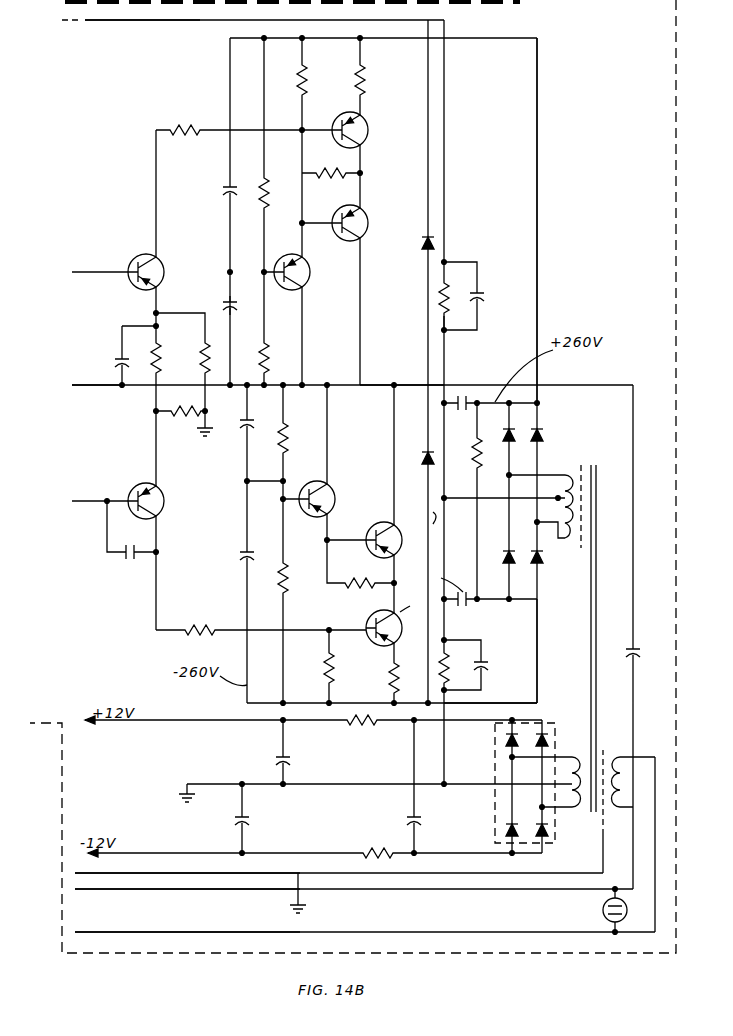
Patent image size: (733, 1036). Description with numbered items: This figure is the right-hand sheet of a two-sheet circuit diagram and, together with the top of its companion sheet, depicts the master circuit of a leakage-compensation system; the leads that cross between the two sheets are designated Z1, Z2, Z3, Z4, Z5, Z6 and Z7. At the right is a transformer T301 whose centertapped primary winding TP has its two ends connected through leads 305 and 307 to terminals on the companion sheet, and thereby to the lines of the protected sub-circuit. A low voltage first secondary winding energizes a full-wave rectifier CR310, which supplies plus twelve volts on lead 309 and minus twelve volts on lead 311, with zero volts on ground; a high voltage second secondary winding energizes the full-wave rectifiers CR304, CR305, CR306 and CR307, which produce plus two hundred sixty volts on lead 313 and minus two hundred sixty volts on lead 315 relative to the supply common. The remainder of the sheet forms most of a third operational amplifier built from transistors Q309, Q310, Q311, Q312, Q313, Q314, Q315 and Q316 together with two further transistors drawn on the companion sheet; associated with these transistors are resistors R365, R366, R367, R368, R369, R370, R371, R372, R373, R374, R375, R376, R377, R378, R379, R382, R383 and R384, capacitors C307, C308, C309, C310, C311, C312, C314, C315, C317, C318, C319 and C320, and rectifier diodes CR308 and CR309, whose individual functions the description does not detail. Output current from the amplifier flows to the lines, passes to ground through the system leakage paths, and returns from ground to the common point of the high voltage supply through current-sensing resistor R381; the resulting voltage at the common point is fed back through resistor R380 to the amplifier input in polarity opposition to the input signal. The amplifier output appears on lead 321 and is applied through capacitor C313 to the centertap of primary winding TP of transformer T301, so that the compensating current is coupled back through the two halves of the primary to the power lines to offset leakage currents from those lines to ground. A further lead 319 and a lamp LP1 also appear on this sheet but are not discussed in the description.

The interconnecting lead Z1 is at (100, 20).
The interconnecting lead Z2 is at (98, 270).
The interconnecting lead Z3 is at (96, 384).
The interconnecting lead Z4 is at (98, 500).
The interconnecting lead Z5 is at (96, 866).
The interconnecting lead Z6 is at (92, 892).
The interconnecting lead Z7 is at (96, 924).
The lead 309 is at (138, 720).
The lead 311 is at (134, 852).
The lead 307 is at (140, 866).
The ground return line 319 is at (146, 892).
The lead 305 is at (195, 924).
The lead 313 is at (537, 218).
The lead 321 is at (424, 384).
The lead 315 is at (544, 652).
The resistor R369 is at (183, 128).
The capacitor C309 is at (222, 192).
The resistor R374 is at (308, 72).
The resistor R378 is at (368, 72).
The transistor Q312 is at (366, 118).
The resistor R370 is at (270, 180).
The resistor R375 is at (356, 174).
The transistor Q313 is at (361, 218).
The transistor Q311 is at (303, 262).
The diode CR308 is at (420, 248).
The resistor R380 is at (436, 296).
The capacitor C314 is at (482, 297).
The transistor Q309 is at (158, 260).
The capacitor C310 is at (228, 300).
The potentiometer R366 is at (200, 356).
The potentiometer R365 is at (150, 364).
The capacitor C307 is at (116, 357).
The resistor R371 is at (270, 340).
The resistor R367 is at (162, 410).
The transistor Q310 is at (166, 498).
The capacitor C308 is at (144, 549).
The resistor R368 is at (212, 628).
The capacitor C311 is at (242, 440).
The capacitor C312 is at (240, 558).
The resistor R372 is at (290, 445).
The resistor R373 is at (286, 583).
The transistor Q314 is at (326, 484).
The transistor Q315 is at (368, 524).
The resistor R376 is at (360, 570).
The transistor Q316 is at (388, 633).
The resistor R377 is at (340, 660).
The resistor R379 is at (390, 676).
The resistor R382 is at (470, 452).
The diode CR309 is at (422, 458).
The capacitor C315 is at (466, 398).
The full-wave rectifier CR304 is at (512, 430).
The full-wave rectifier CR306 is at (537, 434).
The full-wave rectifier CR305 is at (509, 565).
The full-wave rectifier CR307 is at (540, 565).
The transformer T301 is at (594, 572).
The capacitor C313 is at (640, 650).
The capacitor C317 is at (484, 668).
The current-sensing resistor R381 is at (456, 675).
The resistor R383 is at (348, 720).
The capacitor C318 is at (288, 762).
The capacitor C319 is at (250, 822).
The capacitor C320 is at (418, 822).
The resistor R384 is at (370, 844).
The full-wave rectifier CR310 is at (560, 847).
The centertapped primary winding TP is at (622, 792).
The lamp LP1 is at (600, 910).